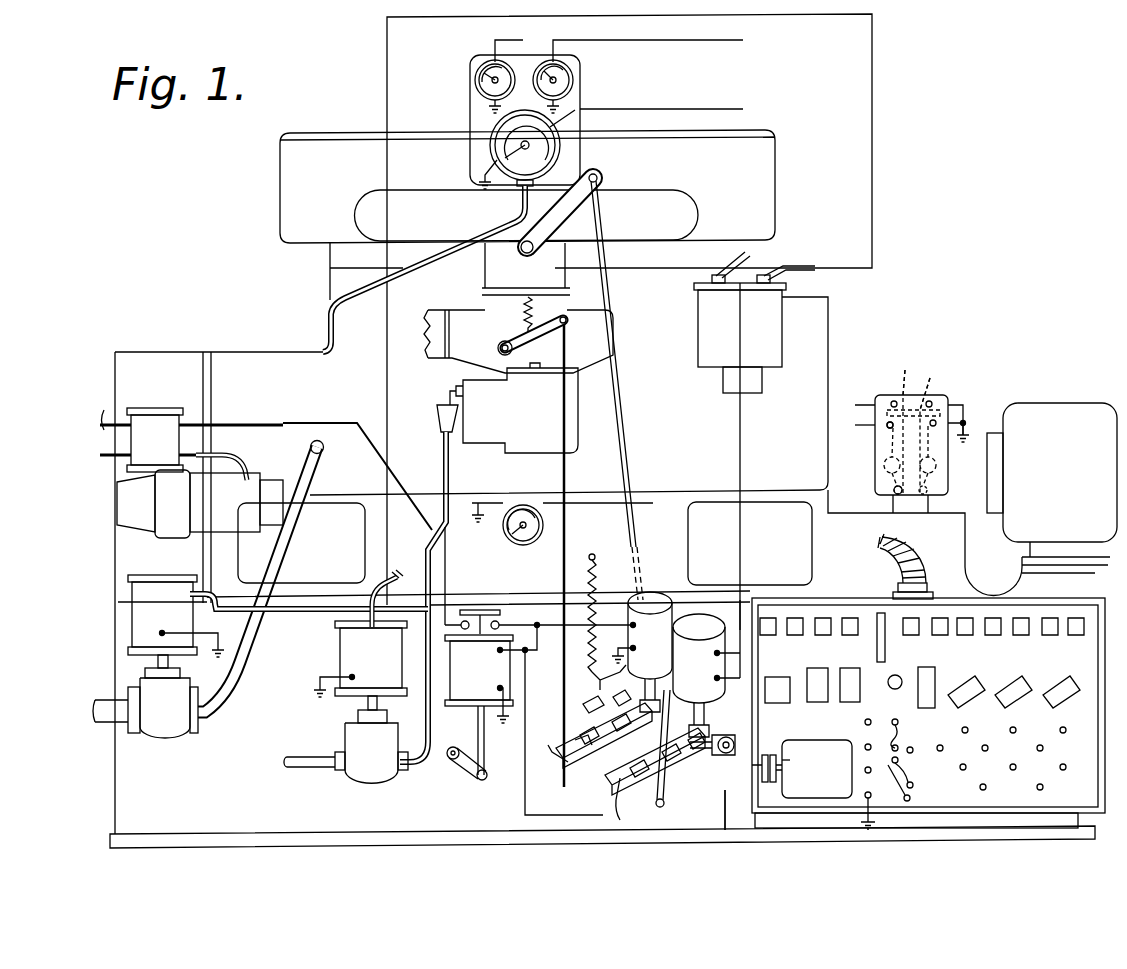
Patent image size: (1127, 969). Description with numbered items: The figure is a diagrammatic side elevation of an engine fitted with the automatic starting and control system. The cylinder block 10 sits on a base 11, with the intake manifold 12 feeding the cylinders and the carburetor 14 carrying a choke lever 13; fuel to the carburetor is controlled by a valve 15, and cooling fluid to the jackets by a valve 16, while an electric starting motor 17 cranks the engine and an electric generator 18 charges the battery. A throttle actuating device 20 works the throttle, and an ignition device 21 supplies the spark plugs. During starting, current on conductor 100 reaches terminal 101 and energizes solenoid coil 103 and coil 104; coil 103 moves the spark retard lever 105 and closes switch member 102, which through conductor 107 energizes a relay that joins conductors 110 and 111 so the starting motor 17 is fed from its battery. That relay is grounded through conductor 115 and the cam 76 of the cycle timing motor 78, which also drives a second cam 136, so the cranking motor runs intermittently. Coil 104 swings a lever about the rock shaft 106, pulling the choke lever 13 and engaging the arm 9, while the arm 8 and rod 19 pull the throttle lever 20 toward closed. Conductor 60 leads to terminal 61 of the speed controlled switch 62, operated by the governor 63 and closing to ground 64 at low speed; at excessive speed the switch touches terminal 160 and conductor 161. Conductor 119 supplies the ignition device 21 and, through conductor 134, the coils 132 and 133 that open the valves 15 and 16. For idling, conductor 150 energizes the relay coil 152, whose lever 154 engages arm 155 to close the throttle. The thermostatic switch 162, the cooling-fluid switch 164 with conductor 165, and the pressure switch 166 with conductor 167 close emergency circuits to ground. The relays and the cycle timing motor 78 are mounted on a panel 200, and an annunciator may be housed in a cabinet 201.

The arm 8 is at (677, 788).
The arm 9 is at (577, 727).
The cylinder block 10 is at (254, 358).
The base 11 is at (602, 819).
The intake manifold 12 is at (527, 215).
The choke lever 13 is at (519, 336).
The carburetor 14 is at (518, 341).
The valve 15 is at (346, 739).
The valve 16 is at (145, 696).
The electric starting motor 17 is at (200, 504).
The electric generator 18 is at (1052, 488).
The rod 19 is at (622, 452).
The throttle actuating device 20 is at (600, 178).
The ignition device 21 is at (754, 322).
The conductor 60 is at (870, 405).
The terminal 61 is at (918, 370).
The speed controlled switch 62 is at (937, 386).
The tachometer or centrifugal governor 63 is at (875, 484).
The ground 64 is at (967, 423).
The cam 76 is at (765, 753).
The cycle timing motor 78 is at (817, 769).
The conductor 100 is at (521, 790).
The terminal 101 is at (503, 626).
The movable contact or switch member 102 is at (484, 605).
The solenoid coil 103 is at (491, 700).
The coil 104 is at (648, 593).
The spark retard device or lever 105 is at (456, 762).
The rock shaft 106 is at (710, 765).
The conductor 107 is at (340, 422).
The conductor 110 is at (100, 427).
The conductor 111 is at (233, 460).
The conductor 115 is at (108, 412).
The conductor 119 is at (740, 452).
The coil 132 is at (360, 633).
The coil 133 is at (278, 616).
The conductor 134 is at (912, 201).
The second cam 136 is at (780, 757).
The conductor 150 is at (742, 600).
The relay coil 152 is at (698, 620).
The lever 154 is at (638, 805).
The arm 155 is at (595, 763).
The terminal 160 is at (890, 428).
The conductor 161 is at (875, 425).
The thermostatically operated switch 162 is at (507, 540).
The switch or instrument 164 is at (574, 81).
The conductor 165 is at (703, 40).
The liquid pressure actuated switch or instrument 166 is at (480, 80).
The conductor 167 is at (495, 58).
The panel 200 is at (928, 713).
The cabinet 201 is at (740, 810).